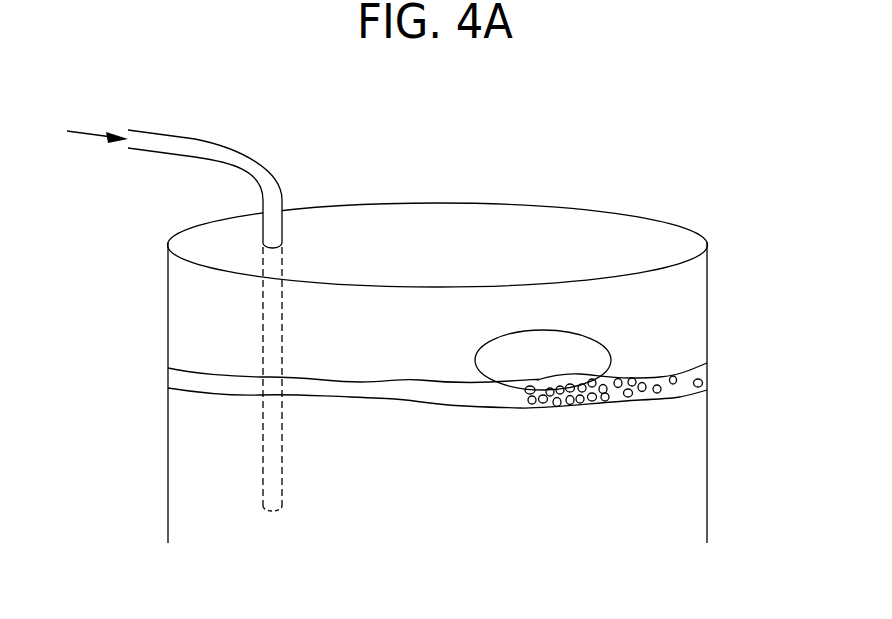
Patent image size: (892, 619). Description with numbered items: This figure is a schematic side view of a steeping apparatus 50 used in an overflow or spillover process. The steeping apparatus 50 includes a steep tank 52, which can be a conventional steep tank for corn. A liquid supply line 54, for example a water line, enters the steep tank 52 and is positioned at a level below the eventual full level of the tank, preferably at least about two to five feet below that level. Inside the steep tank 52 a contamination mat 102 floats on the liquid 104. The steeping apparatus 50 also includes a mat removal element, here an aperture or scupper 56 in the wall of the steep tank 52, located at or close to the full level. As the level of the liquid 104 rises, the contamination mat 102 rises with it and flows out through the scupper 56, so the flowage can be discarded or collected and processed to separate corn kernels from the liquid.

The steeping apparatus 50 is at (606, 134).
The steep tank 52 is at (403, 373).
The liquid supply line 54 is at (174, 307).
The scupper 56 is at (592, 276).
The contamination mat 102 is at (652, 367).
The liquid 104 is at (455, 488).